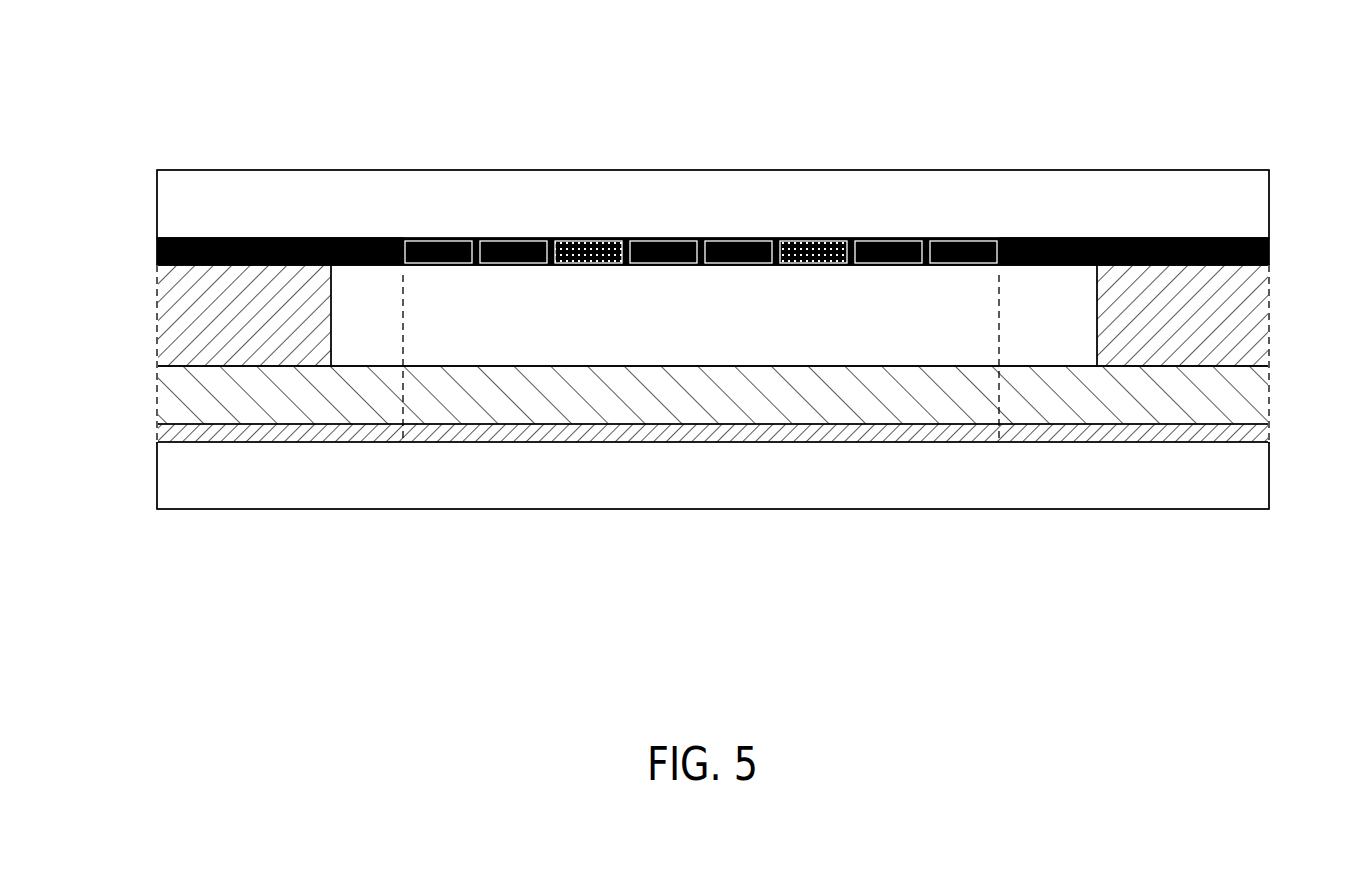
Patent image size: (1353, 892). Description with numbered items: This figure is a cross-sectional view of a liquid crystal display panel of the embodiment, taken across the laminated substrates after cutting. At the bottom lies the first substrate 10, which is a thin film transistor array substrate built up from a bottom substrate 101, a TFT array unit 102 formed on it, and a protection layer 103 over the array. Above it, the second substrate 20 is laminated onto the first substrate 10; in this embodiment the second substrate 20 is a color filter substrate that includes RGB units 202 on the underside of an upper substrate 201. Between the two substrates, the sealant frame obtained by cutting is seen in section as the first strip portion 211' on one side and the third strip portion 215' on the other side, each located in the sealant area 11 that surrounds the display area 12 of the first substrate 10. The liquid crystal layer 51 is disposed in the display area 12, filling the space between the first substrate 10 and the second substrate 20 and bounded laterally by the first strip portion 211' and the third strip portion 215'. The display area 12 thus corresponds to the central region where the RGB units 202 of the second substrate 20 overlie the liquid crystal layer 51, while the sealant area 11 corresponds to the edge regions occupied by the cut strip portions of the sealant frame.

The first substrate 10 is at (148, 366).
The bottom substrate 101 is at (1260, 475).
The TFT array unit 102 is at (1264, 432).
The protection layer 103 is at (1264, 397).
The second substrate 20 is at (148, 170).
The upper substrate 201 is at (1260, 207).
The RGB units 202 is at (1269, 252).
The first strip portion 211' is at (209, 315).
The third strip portion 215' is at (1225, 315).
The liquid crystal layer 51 is at (866, 337).
The sealant area 11 is at (407, 138).
The display area 12 is at (1005, 138).